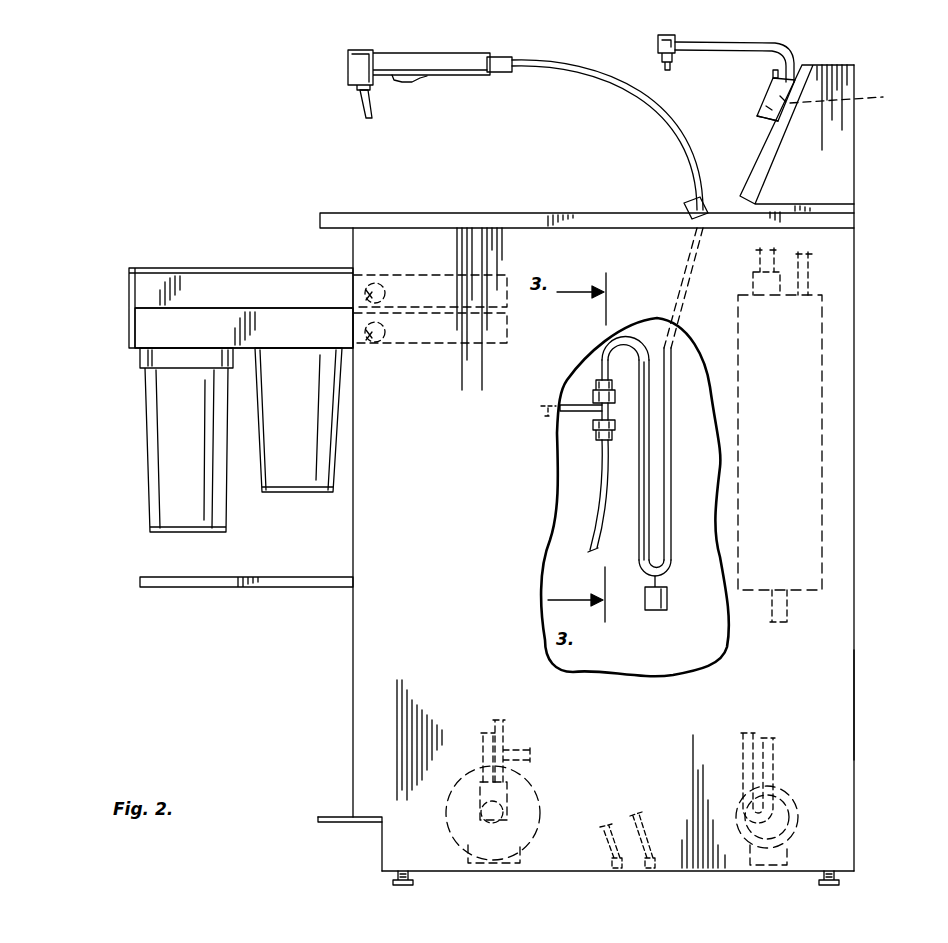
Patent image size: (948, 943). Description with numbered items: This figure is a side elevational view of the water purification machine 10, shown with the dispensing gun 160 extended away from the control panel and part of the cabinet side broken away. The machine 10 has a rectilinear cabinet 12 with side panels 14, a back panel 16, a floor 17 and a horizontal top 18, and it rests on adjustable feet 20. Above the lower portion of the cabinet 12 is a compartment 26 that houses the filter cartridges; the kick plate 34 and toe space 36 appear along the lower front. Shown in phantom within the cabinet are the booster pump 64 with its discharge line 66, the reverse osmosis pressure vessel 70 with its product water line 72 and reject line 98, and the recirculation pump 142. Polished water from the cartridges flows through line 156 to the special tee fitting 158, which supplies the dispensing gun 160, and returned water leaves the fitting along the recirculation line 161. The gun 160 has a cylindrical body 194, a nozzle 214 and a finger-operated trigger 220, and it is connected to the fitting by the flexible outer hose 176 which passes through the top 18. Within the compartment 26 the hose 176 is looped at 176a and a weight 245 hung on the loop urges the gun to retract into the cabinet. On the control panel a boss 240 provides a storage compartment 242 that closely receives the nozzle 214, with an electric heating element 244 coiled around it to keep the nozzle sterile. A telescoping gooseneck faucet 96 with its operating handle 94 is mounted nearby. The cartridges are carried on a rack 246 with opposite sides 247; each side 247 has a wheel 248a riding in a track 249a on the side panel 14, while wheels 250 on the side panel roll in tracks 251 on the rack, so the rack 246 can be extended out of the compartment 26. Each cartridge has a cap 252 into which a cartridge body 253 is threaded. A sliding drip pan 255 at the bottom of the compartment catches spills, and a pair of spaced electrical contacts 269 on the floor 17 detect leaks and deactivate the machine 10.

The water purification machine 10 is at (265, 117).
The cabinet 12 is at (349, 692).
The side panel 14 is at (843, 705).
The back panel 16 is at (856, 578).
The floor 17 is at (560, 872).
The horizontal top 18 is at (518, 213).
The adjustable feet 20 is at (396, 884).
The compartment 26 is at (716, 608).
The kick plate 34 is at (331, 815).
The toe space 36 is at (320, 822).
The booster pump 64 is at (525, 795).
The discharge line 66 is at (790, 606).
The reverse osmosis pressure vessel 70 is at (800, 410).
The product water line 72 is at (757, 255).
The operating handle 94 is at (770, 70).
The telescoping gooseneck faucet 96 is at (672, 35).
The reject line 98 is at (805, 272).
The recirculation pump 142 is at (783, 812).
The line 156 is at (600, 510).
The special tee fitting 158 is at (598, 413).
The dispensing gun 160 is at (450, 54).
The recirculation line 161 is at (573, 408).
The flexible outer hose 176 is at (656, 117).
The loop 176a is at (672, 470).
The cylindrical body 194 is at (481, 72).
The nozzle 214 is at (374, 105).
The trigger 220 is at (424, 84).
The boss 240 is at (766, 99).
The compartment 242 is at (853, 100).
The electric heating element 244 is at (768, 118).
The weight 245 is at (657, 611).
The rack 246 is at (213, 268).
The side 247 is at (258, 283).
The wheel 248a is at (372, 348).
The track 249a is at (460, 343).
The wheel 250 is at (372, 275).
The track 251 is at (418, 290).
The cap 252 is at (153, 357).
The cartridge body 253 is at (288, 478).
The sliding drip pan 255 is at (216, 586).
The electrical contacts 269 is at (660, 864).